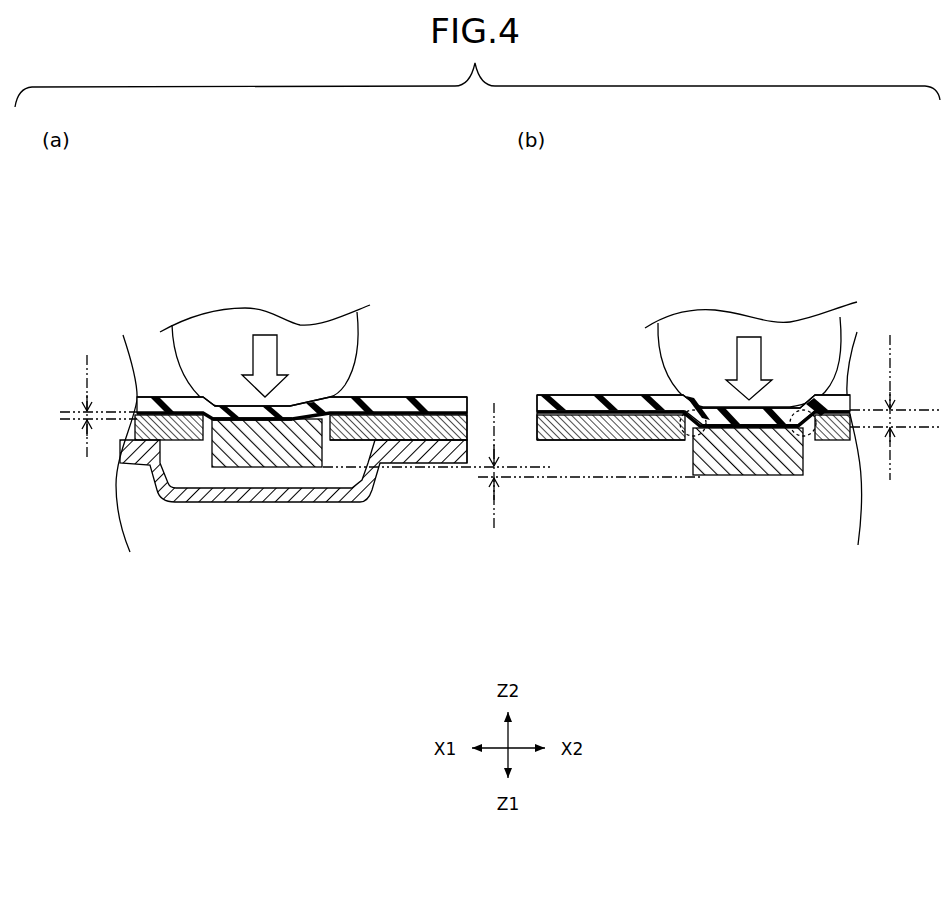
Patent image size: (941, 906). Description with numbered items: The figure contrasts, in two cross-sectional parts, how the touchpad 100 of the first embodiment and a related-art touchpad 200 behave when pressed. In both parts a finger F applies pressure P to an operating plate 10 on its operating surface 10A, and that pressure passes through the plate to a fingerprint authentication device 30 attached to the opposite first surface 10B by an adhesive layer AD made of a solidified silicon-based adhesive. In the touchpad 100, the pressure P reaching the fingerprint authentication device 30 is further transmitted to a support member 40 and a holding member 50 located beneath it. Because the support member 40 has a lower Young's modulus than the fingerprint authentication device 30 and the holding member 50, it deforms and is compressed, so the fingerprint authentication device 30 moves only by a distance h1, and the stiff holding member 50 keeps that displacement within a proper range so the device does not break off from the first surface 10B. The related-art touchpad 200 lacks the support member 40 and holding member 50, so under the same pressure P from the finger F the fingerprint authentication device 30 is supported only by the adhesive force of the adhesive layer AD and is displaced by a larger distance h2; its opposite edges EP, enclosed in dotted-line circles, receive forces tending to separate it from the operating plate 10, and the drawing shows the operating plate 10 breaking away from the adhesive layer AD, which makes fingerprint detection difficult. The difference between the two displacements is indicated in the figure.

The operating plate 10 is at (463, 397).
The operating surface 10A is at (434, 392).
The first surface 10B is at (425, 419).
The fingerprint authentication device 30 is at (230, 447).
The support member 40 is at (272, 478).
The holding member 50 is at (328, 490).
The touchpad 100 is at (126, 283).
The related-art touchpad 200 is at (566, 294).
The finger F is at (225, 325).
The pressure P is at (507, 367).
The adhesive layer AD is at (302, 411).
The edges EP is at (691, 437).
The distance h1 is at (96, 406).
The distance h2 is at (895, 407).